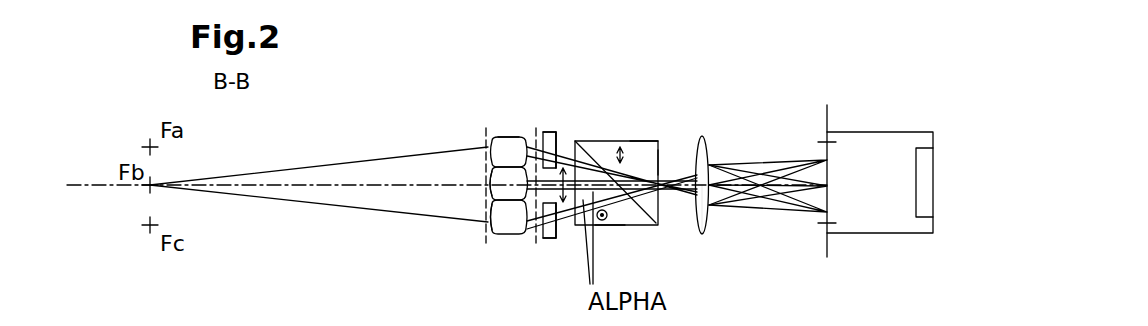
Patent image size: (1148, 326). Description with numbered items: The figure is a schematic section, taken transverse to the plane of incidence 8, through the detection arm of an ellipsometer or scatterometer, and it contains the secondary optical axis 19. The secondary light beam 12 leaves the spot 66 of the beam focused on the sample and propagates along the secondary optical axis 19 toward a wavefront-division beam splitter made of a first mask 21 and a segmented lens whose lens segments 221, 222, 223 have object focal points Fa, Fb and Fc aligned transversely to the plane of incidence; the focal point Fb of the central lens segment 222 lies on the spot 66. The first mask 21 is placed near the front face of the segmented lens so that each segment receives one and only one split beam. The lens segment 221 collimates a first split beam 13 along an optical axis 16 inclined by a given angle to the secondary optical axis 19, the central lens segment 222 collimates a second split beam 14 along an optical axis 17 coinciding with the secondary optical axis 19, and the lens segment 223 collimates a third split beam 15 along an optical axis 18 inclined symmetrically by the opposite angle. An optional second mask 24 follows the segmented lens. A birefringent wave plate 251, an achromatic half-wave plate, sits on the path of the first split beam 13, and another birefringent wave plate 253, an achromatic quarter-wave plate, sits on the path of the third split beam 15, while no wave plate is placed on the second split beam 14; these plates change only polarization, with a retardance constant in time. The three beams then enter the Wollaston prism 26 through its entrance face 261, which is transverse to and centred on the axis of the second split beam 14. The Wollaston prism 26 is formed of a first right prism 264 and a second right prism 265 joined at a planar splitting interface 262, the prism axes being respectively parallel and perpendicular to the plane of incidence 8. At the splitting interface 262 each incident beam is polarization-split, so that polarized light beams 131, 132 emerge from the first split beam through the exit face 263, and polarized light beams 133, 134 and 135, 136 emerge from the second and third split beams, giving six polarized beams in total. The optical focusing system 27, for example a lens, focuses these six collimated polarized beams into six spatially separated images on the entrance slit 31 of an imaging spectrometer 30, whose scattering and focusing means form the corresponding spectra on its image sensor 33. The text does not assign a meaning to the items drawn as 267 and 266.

The plane of incidence 8 is at (102, 185).
The spot of the beam focused on the sample 66 is at (146, 186).
The secondary optical axis 19 is at (294, 170).
The secondary light beam 12 is at (310, 203).
The first mask 21 is at (487, 132).
The first collimated split beam 13 is at (533, 143).
The optical axis of the first split beam 16 is at (492, 147).
The optical axis of the second split beam 17 is at (517, 198).
The third collimated split beam 15 is at (534, 230).
The lens segment 221 is at (503, 143).
The central lens segment 222 is at (497, 197).
The lens segment 223 is at (497, 222).
The second mask 24 is at (542, 132).
The birefringent wave plate 251 is at (550, 135).
The birefringent wave plate 253 is at (549, 240).
The second collimated split beam 14 is at (556, 152).
The optical axis of the third split beam 18 is at (558, 238).
The entrance face of the Wollaston prism 261 is at (563, 167).
The beam offset 267 is at (620, 147).
The Wollaston prism 26 is at (655, 226).
The first right prism 264 is at (632, 217).
The cube bottom face 266 is at (607, 225).
The second right prism 265 is at (645, 150).
The exit face of the Wollaston prism 263 is at (660, 163).
The optical focusing system 27 is at (705, 143).
The planar splitting interface 262 is at (705, 213).
The polarized light beam 132 is at (797, 165).
The polarized light beam 133 is at (783, 167).
The polarized light beam 135 is at (798, 200).
The polarized light beam 131 is at (807, 157).
The polarized light beam 134 is at (827, 190).
The polarized light beam 136 is at (807, 213).
The entrance slit 31 is at (828, 247).
The imaging spectrometer 30 is at (885, 223).
The image sensor 33 is at (916, 160).